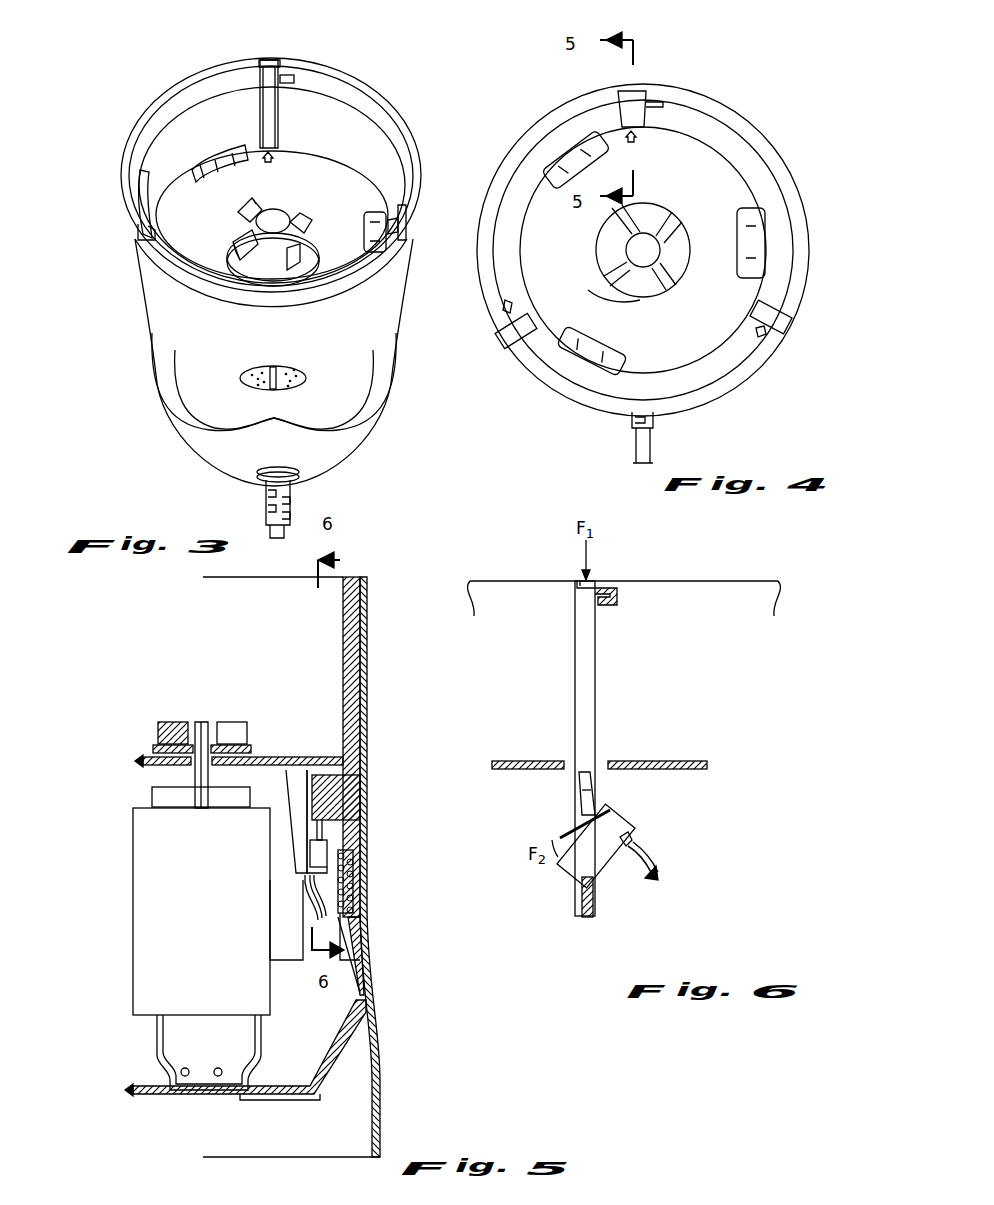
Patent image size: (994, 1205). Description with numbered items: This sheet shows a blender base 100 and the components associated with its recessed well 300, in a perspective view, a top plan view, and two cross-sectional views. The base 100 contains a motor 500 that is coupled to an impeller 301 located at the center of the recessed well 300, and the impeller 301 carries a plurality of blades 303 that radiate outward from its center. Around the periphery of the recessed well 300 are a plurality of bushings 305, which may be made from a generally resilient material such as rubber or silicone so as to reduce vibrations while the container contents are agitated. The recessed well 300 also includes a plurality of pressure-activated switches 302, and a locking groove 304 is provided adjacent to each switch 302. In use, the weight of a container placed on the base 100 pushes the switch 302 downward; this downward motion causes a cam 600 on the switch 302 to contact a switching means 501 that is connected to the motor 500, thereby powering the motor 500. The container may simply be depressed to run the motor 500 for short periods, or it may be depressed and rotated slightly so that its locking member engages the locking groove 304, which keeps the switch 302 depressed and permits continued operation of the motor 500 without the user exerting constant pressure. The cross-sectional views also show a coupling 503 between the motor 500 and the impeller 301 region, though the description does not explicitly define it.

In FIG. 3, the base 100 is at (160, 298).
In FIG. 4, the base 100 is at (762, 130).
In FIG. 5, the base 100 is at (368, 768).
In FIG. 6, the base 100 is at (624, 675).
In FIG. 3, the recessed well 300 is at (358, 209).
In FIG. 4, the recessed well 300 is at (678, 175).
In FIG. 5, the recessed well 300 is at (262, 648).
In FIG. 3, the impeller 301 is at (273, 220).
In FIG. 4, the impeller 301 is at (640, 252).
In FIG. 5, the impeller 301 is at (206, 710).
In FIG. 3, the pressure-activated switch 302 is at (266, 100).
In FIG. 4, the pressure-activated switch 302 is at (636, 90).
In FIG. 5, the pressure-activated switch 302 is at (343, 640).
In FIG. 6, the pressure-activated switch 302 is at (590, 670).
In FIG. 3, the blades 303 is at (294, 232).
In FIG. 4, the blades 303 is at (648, 226).
In FIG. 5, the blades 303 is at (170, 722).
In FIG. 3, the locking groove 304 is at (290, 78).
In FIG. 4, the locking groove 304 is at (505, 305).
In FIG. 6, the locking groove 304 is at (608, 600).
In FIG. 3, the bushings 305 is at (222, 162).
In FIG. 4, the bushings 305 is at (568, 148).
In FIG. 5, the motor 500 is at (150, 858).
In FIG. 5, the switching means 501 is at (315, 858).
In FIG. 6, the switching means 501 is at (625, 870).
In FIG. 5, the coupling 503 is at (203, 776).
In FIG. 6, the cam 600 is at (590, 793).